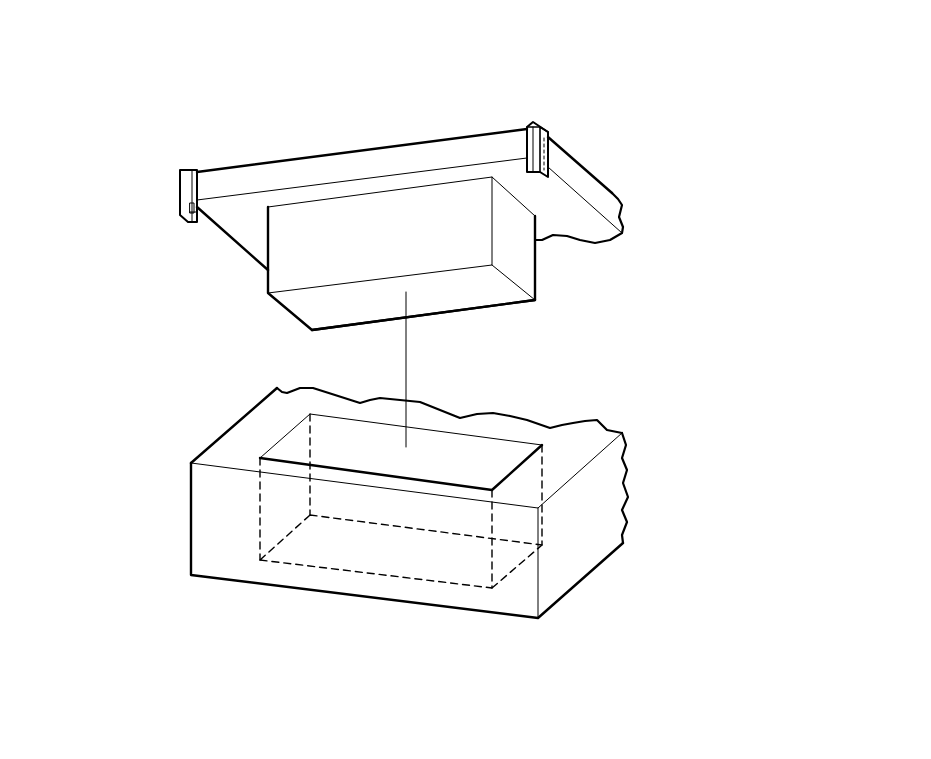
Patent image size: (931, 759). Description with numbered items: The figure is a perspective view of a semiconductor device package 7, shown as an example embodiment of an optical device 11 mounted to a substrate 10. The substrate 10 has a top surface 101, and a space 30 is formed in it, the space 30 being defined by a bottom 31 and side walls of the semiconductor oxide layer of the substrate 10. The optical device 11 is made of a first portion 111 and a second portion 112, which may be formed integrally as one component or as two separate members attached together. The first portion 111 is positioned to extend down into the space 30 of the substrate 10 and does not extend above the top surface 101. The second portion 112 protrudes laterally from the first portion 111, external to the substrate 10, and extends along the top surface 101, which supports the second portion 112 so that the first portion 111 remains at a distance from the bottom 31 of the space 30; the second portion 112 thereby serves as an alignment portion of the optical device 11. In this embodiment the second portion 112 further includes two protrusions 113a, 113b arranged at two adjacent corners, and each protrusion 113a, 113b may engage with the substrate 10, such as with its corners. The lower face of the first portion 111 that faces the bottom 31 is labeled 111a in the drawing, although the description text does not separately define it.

The semiconductor device package 7 is at (750, 230).
The optical device 11 is at (597, 125).
The second portion 112 is at (597, 195).
The protrusion 113a is at (187, 188).
The protrusion 113b is at (548, 155).
The first portion 111 is at (525, 263).
The bottom surface of housing block 111a is at (485, 290).
The substrate 10 is at (646, 410).
The top surface 101 is at (248, 430).
The space 30 is at (450, 458).
The bottom 31 is at (445, 557).